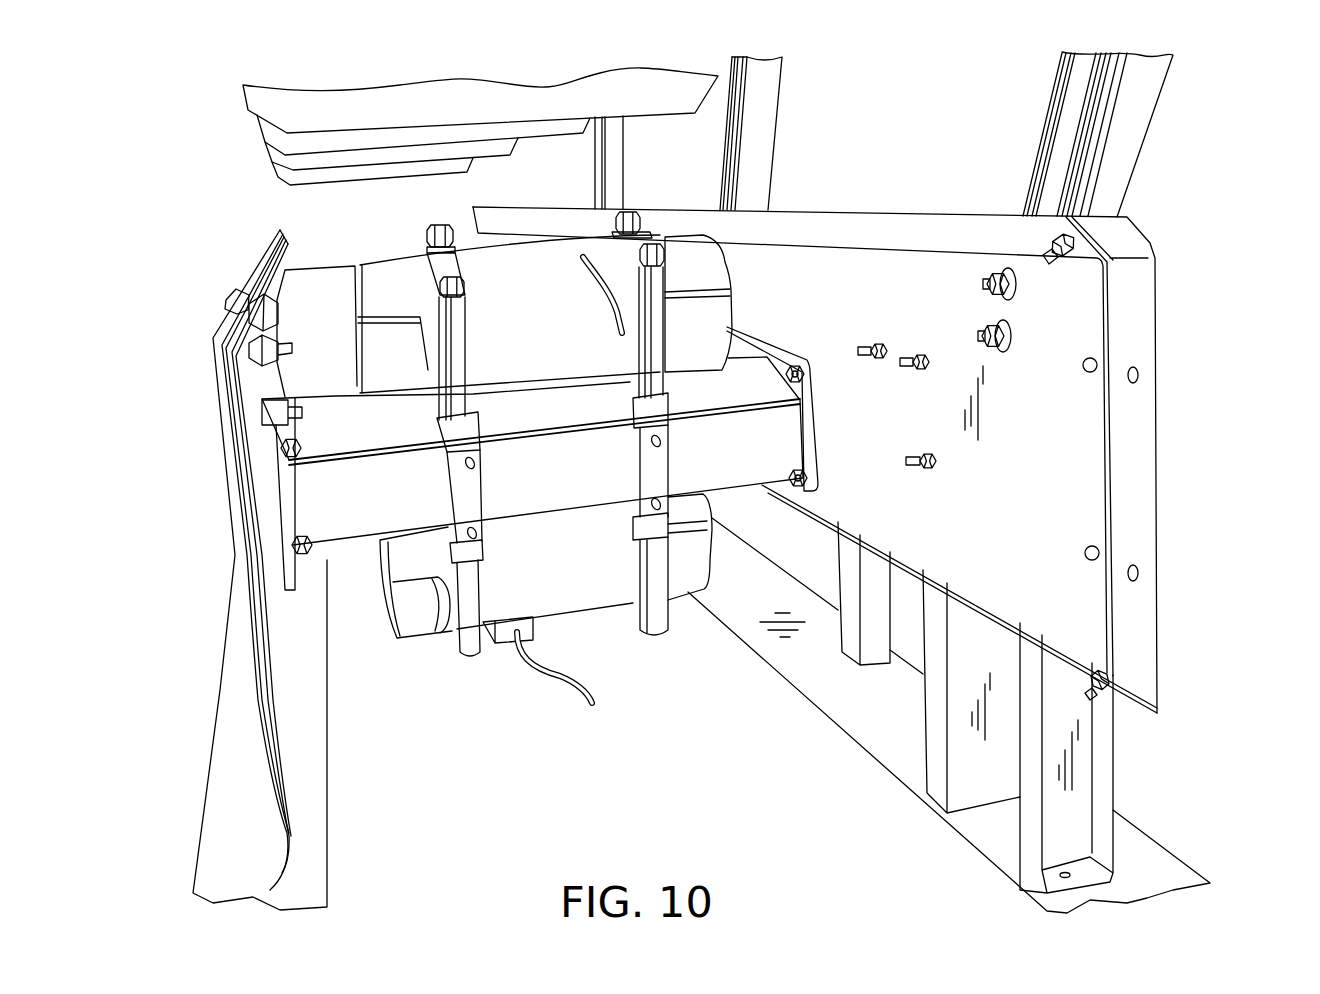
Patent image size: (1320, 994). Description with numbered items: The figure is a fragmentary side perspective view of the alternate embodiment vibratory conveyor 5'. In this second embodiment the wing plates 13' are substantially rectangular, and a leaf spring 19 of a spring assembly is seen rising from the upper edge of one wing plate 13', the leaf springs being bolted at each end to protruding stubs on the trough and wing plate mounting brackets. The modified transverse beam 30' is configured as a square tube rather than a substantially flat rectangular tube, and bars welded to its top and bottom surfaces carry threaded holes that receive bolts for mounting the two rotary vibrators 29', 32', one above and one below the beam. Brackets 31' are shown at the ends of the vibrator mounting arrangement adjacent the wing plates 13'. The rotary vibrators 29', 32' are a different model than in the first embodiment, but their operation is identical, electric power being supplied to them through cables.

The vibratory conveyor 5' is at (777, 485).
The wing plate 13' is at (659, 558).
The leaf spring 19 is at (1150, 144).
The rotary vibrator 29' is at (504, 316).
The transverse beam 30' is at (532, 451).
The clamp bracket 31' is at (547, 434).
The rotary vibrator 32' is at (546, 598).